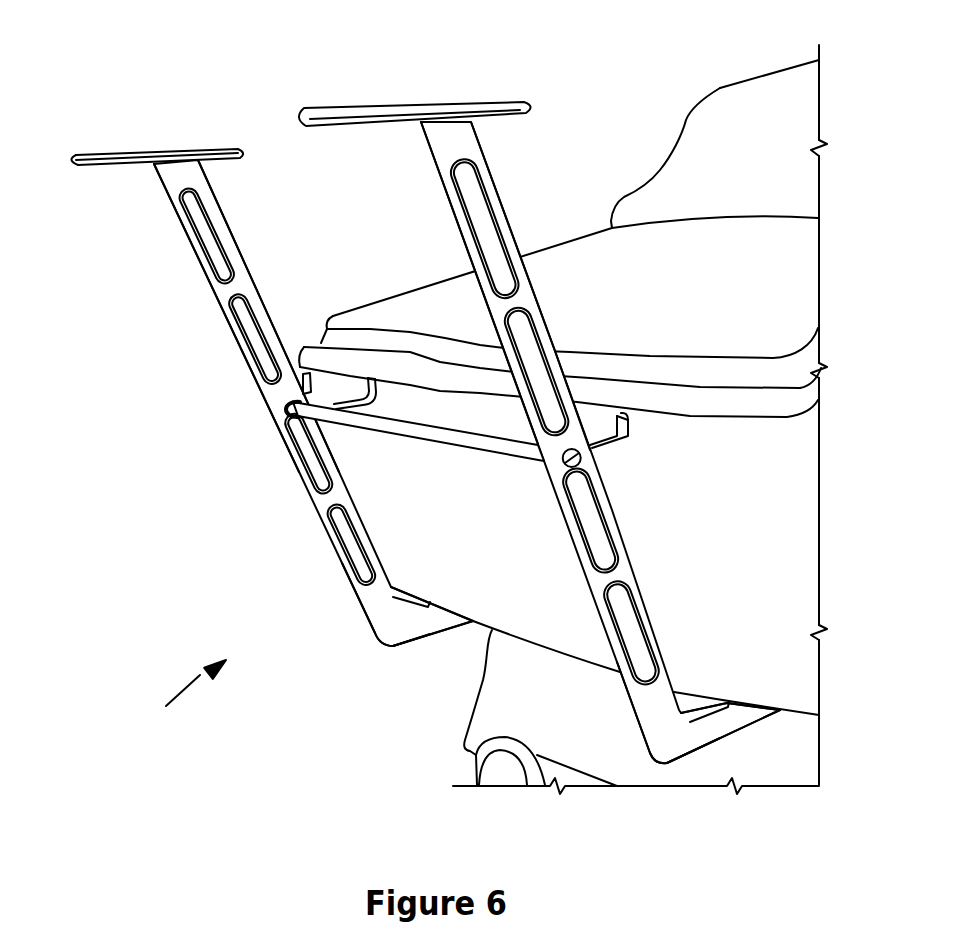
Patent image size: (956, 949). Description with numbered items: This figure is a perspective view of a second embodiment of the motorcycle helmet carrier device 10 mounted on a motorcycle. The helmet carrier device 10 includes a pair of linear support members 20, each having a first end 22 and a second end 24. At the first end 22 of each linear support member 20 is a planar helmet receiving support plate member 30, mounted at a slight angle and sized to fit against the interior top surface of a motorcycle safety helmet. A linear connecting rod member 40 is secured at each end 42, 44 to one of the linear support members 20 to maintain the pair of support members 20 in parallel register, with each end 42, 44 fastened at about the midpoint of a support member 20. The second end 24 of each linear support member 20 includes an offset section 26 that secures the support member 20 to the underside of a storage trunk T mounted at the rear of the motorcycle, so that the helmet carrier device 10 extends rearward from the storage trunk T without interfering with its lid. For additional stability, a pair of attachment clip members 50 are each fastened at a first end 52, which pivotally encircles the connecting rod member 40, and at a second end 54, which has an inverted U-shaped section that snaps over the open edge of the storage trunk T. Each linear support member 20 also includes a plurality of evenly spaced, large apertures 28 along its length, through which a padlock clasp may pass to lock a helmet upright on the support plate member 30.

The motorcycle helmet carrier device 10 is at (166, 706).
The linear support member 20 is at (250, 376).
The first end 22 is at (186, 192).
The second end 24 is at (393, 632).
The offset section 26 is at (433, 623).
The large apertures 28 is at (208, 222).
The helmet receiving support plate member 30 is at (163, 150).
The linear connecting rod member 40 is at (460, 435).
The first end of connecting rod member 42 is at (305, 414).
The second end of connecting rod member 44 is at (536, 452).
The attachment clip member 50 is at (334, 404).
The first end of attachment clip member 52 is at (284, 407).
The second end of attachment clip member 54 is at (373, 383).
The storage trunk T is at (695, 253).